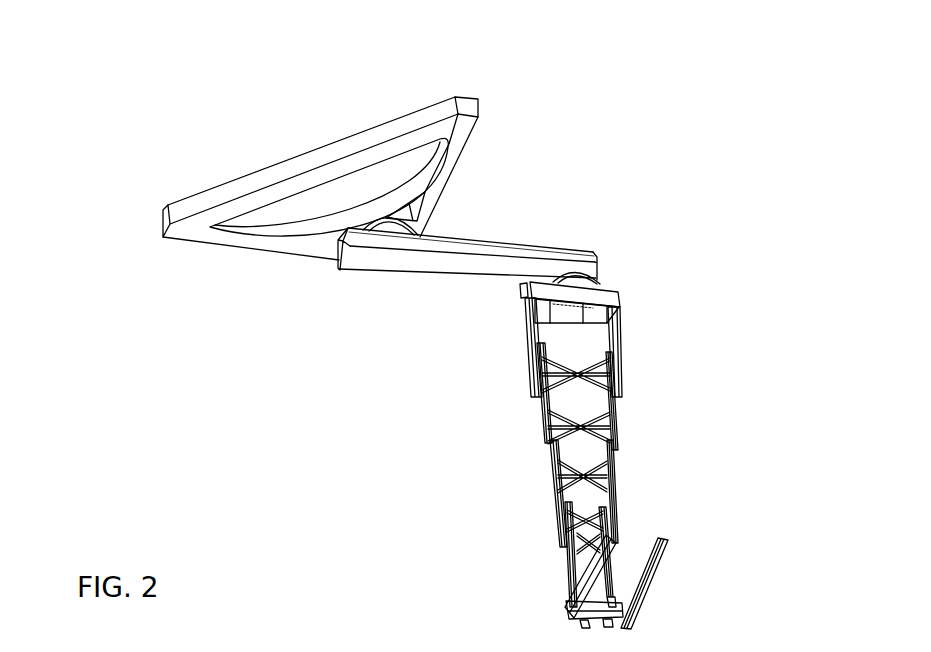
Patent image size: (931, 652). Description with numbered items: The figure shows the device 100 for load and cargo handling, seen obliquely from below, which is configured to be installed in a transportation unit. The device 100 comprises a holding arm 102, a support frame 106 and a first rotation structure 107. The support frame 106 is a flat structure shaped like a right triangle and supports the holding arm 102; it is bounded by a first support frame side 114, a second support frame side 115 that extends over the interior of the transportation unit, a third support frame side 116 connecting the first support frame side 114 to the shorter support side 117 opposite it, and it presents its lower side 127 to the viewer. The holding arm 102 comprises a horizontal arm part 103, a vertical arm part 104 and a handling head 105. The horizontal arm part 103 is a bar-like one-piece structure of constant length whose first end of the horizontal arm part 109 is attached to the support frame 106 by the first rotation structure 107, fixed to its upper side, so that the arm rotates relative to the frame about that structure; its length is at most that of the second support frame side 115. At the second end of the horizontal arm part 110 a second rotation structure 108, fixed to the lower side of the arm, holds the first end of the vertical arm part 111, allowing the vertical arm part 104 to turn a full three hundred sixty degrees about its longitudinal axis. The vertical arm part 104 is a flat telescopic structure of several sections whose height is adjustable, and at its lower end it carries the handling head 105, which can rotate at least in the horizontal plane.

The device 100 is at (106, 28).
The holding arm 102 is at (618, 418).
The horizontal arm part 103 is at (448, 270).
The vertical arm part 104 is at (543, 458).
The handling head 105 is at (641, 589).
The support frame 106 is at (303, 153).
The first rotation structure 107 is at (385, 244).
The second rotation structure 108 is at (598, 282).
The first end of the horizontal arm part 109 is at (340, 256).
The second end of the horizontal arm part 110 is at (598, 276).
The first end of the vertical arm part 111 is at (620, 298).
The first support frame side 114 is at (467, 150).
The second support frame side 115 is at (200, 245).
The third support frame side 116 is at (250, 172).
The support side 117 is at (161, 224).
The lower side 127 is at (267, 243).